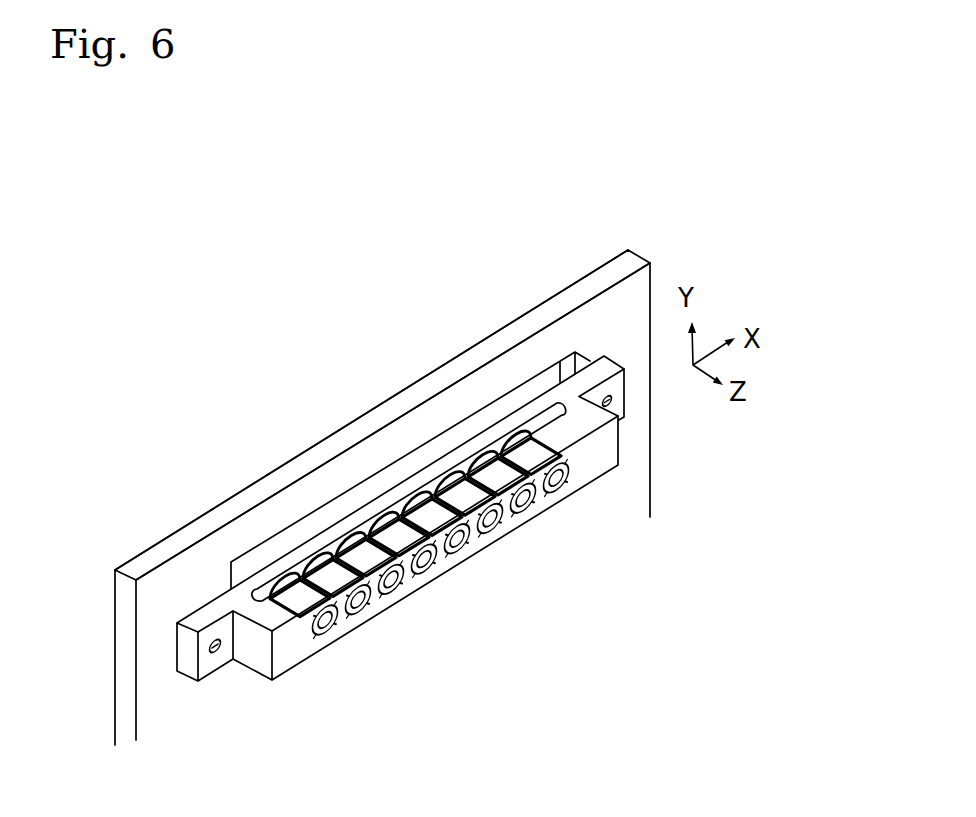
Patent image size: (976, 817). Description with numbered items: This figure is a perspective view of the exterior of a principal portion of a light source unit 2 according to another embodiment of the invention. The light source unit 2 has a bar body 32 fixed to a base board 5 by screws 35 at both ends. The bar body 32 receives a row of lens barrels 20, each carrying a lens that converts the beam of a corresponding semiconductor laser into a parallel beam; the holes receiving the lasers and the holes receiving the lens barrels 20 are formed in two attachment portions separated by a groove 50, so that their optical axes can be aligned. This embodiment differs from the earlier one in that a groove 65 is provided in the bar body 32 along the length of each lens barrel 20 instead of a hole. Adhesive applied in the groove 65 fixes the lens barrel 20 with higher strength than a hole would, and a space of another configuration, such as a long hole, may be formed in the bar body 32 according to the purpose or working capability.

The light source unit 2 is at (141, 506).
The base board 5 is at (398, 406).
The lens barrel 20 is at (394, 591).
The bar body 32 is at (215, 604).
The screw 35 is at (214, 650).
The groove 50 is at (545, 408).
The groove 65 is at (418, 505).